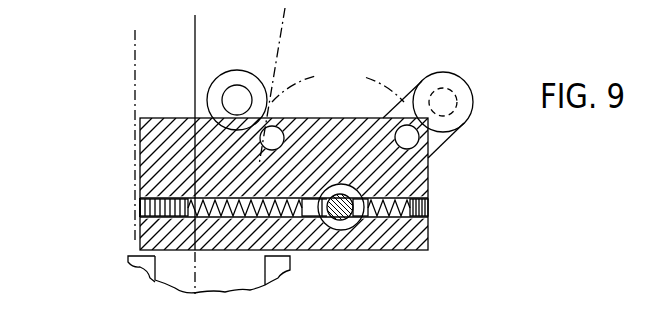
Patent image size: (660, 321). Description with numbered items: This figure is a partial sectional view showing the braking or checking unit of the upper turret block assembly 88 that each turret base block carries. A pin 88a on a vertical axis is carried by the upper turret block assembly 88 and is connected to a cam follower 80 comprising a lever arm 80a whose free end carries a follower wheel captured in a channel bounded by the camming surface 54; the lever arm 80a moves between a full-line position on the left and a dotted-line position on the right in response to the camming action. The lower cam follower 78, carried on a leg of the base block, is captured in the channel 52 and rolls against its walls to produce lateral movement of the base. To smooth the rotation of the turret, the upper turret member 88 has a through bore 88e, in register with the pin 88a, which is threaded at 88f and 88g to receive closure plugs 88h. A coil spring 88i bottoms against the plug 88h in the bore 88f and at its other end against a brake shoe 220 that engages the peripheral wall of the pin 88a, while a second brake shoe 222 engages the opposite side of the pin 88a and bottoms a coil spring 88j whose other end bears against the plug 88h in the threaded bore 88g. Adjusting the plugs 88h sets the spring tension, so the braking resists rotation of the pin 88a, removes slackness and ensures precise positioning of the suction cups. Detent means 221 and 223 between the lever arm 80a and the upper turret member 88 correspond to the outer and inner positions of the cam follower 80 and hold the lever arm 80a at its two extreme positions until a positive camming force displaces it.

The channel 52 is at (176, 62).
The camming surface 54 is at (283, 44).
The cam follower 78 is at (161, 181).
The cam follower 80 is at (232, 72).
The lever arm 80a is at (338, 82).
The upper turret block assembly 88 is at (422, 182).
The pin 88a is at (343, 221).
The through bore 88e is at (223, 198).
The threaded bore portion 88f is at (138, 202).
The threaded bore portion 88g is at (420, 208).
The closure plugs 88h is at (138, 213).
The coil spring 88i is at (252, 216).
The coil spring 88j is at (354, 190).
The brake shoe 220 is at (316, 219).
The detent means 221 is at (281, 146).
The second brake shoe 222 is at (362, 214).
The detent means 223 is at (421, 137).